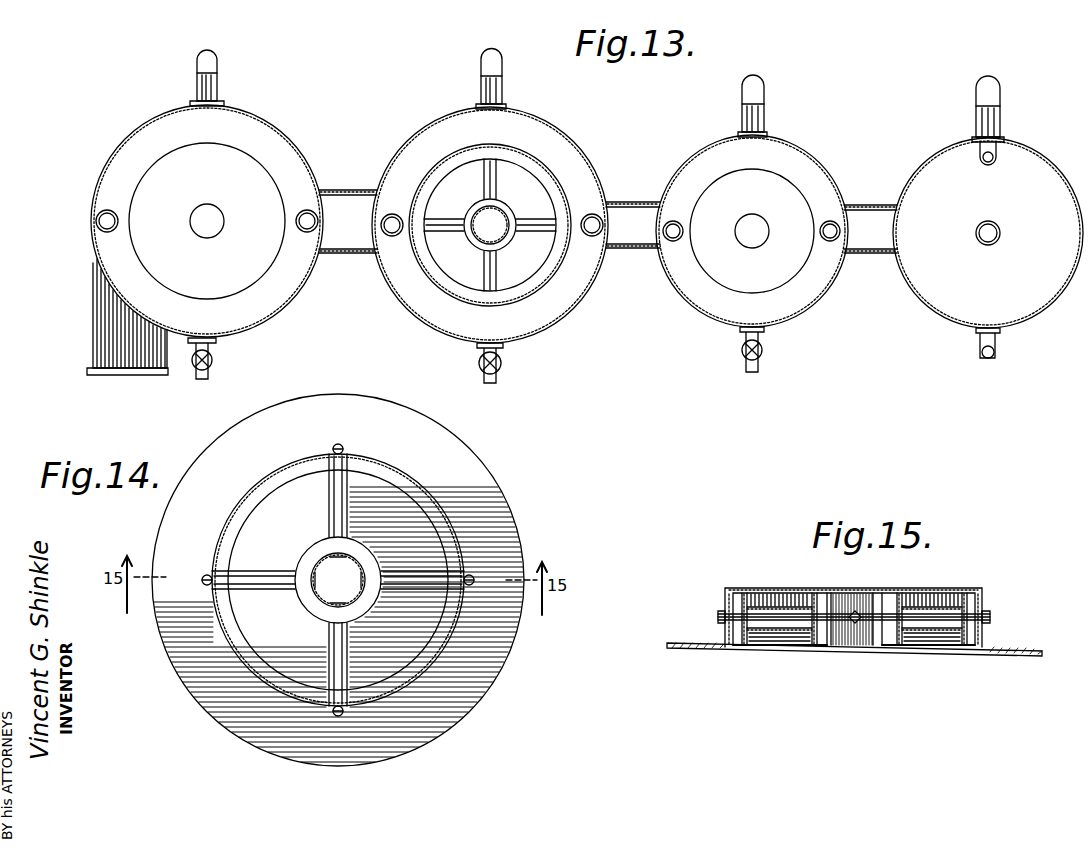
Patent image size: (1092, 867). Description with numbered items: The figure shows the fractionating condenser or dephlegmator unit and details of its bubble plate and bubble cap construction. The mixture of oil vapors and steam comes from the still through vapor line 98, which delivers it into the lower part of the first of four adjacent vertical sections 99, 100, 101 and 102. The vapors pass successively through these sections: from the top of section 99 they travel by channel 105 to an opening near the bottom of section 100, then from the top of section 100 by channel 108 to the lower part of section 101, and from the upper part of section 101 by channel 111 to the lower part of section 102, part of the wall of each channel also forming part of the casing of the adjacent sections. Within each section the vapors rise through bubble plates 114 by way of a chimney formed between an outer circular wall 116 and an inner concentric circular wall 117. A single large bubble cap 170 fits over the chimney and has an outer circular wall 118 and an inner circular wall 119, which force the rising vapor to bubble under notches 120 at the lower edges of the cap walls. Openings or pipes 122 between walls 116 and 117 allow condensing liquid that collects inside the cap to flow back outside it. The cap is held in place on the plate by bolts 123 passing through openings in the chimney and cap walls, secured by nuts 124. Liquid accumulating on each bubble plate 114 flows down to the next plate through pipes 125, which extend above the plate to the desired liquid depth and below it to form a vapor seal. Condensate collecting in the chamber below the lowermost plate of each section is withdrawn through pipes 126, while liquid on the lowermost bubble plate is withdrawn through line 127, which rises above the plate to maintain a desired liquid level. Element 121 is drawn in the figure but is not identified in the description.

In FIG. 13, the vapor line 98 is at (96, 346).
In FIG. 13, the section 99 is at (276, 121).
In FIG. 13, the section 100 is at (551, 130).
In FIG. 13, the section 101 is at (812, 151).
In FIG. 13, the section 102 is at (1041, 156).
In FIG. 13, the channel 105 is at (346, 254).
In FIG. 13, the channel 108 is at (633, 249).
In FIG. 13, the channel 111 is at (870, 247).
In FIG. 14, the bubble plate 114 is at (470, 452).
In FIG. 15, the bubble plate 114 is at (998, 656).
In FIG. 13, the outer circular wall 116 is at (548, 172).
In FIG. 14, the outer circular wall 116 is at (400, 497).
In FIG. 15, the outer circular wall 116 is at (753, 592).
In FIG. 13, the inner concentric circular wall 117 is at (470, 217).
In FIG. 14, the inner concentric circular wall 117 is at (308, 551).
In FIG. 15, the inner concentric circular wall 117 is at (807, 606).
In FIG. 13, the outer circular wall 118 is at (452, 160).
In FIG. 14, the outer circular wall 118 is at (441, 504).
In FIG. 15, the outer circular wall 118 is at (732, 607).
In FIG. 13, the inner circular wall 119 is at (504, 236).
In FIG. 14, the inner circular wall 119 is at (361, 559).
In FIG. 15, the inner circular wall 119 is at (837, 592).
In FIG. 15, the notches 120 is at (732, 650).
In FIG. 15, the ring segment 121 is at (925, 593).
In FIG. 13, the openings or pipes 122 is at (538, 224).
In FIG. 14, the openings or pipes 122 is at (260, 570).
In FIG. 15, the openings or pipes 122 is at (782, 643).
In FIG. 14, the bolts 123 is at (337, 492).
In FIG. 15, the bolts 123 is at (947, 614).
In FIG. 14, the nuts 124 is at (203, 570).
In FIG. 15, the nuts 124 is at (989, 615).
In FIG. 13, the pipes 125 is at (382, 214).
In FIG. 13, the pipes 126 is at (1001, 232).
In FIG. 13, the line 127 is at (221, 62).
In FIG. 13, the bubble cap 170 is at (260, 264).